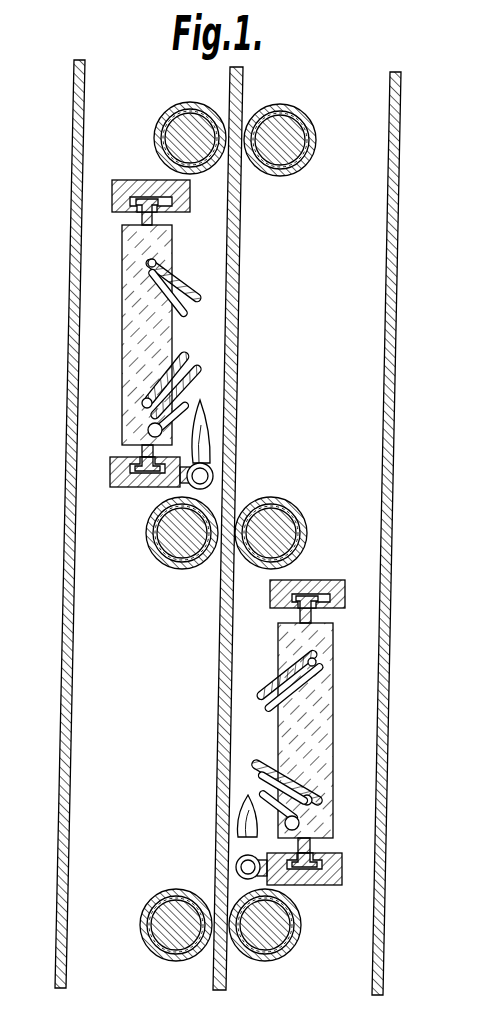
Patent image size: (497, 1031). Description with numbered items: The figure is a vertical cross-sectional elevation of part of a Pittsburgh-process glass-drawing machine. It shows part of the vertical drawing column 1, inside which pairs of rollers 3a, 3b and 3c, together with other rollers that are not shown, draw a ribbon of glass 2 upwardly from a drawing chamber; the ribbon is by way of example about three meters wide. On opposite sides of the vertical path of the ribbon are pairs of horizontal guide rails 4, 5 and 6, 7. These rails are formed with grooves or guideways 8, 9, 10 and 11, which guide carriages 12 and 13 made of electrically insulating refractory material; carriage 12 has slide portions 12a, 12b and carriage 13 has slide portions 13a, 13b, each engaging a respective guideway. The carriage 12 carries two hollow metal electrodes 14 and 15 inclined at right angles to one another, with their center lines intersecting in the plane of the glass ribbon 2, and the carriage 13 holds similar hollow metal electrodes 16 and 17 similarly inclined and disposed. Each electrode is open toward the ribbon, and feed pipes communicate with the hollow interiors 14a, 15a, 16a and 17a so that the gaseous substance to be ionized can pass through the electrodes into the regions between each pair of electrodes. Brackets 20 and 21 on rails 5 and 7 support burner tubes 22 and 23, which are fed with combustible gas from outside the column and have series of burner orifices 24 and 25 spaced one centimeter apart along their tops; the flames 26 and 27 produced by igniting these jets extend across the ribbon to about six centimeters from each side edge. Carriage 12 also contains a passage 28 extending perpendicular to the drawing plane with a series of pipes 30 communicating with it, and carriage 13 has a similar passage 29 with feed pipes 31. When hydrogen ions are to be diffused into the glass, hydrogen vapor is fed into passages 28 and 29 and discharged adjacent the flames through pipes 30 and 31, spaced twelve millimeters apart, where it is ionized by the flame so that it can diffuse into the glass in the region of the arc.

The vertical drawing column 1 is at (392, 852).
The ribbon of glass 2 is at (236, 83).
The pair of rollers 3a is at (215, 110).
The pair of rollers 3b is at (257, 563).
The pair of rollers 3c is at (200, 953).
The horizontal guide rail 4 is at (128, 180).
The horizontal guide rail 5 is at (118, 487).
The horizontal guide rail 6 is at (315, 580).
The horizontal guide rail 7 is at (322, 885).
The groove or guideway 8 is at (173, 195).
The groove or guideway 9 is at (157, 488).
The groove or guideway 10 is at (345, 591).
The groove or guideway 11 is at (314, 866).
The carriage 12 is at (143, 305).
The slide portion 12a is at (150, 218).
The slide portion 12b is at (132, 446).
The carriage 13 is at (312, 738).
The slide portion 13a is at (311, 614).
The slide portion 13b is at (303, 888).
The hollow metal electrode 14 is at (183, 290).
The hollow interior 14a is at (200, 308).
The hollow metal electrode 15 is at (195, 360).
The hollow interior 15a is at (205, 355).
The hollow metal electrode 16 is at (278, 682).
The hollow interior 16a is at (257, 703).
The hollow metal electrode 17 is at (265, 752).
The hollow interior 17a is at (253, 764).
The bracket 20 is at (188, 493).
The bracket 21 is at (262, 874).
The burner tube 22 is at (212, 465).
The burner tube 23 is at (240, 864).
The burner orifices 24 is at (207, 470).
The burner orifices 25 is at (240, 860).
The flame 26 is at (205, 427).
The flame 27 is at (247, 822).
The passage 28 is at (145, 427).
The passage 29 is at (300, 828).
The pipes 30 is at (185, 400).
The feed pipes 31 is at (260, 792).